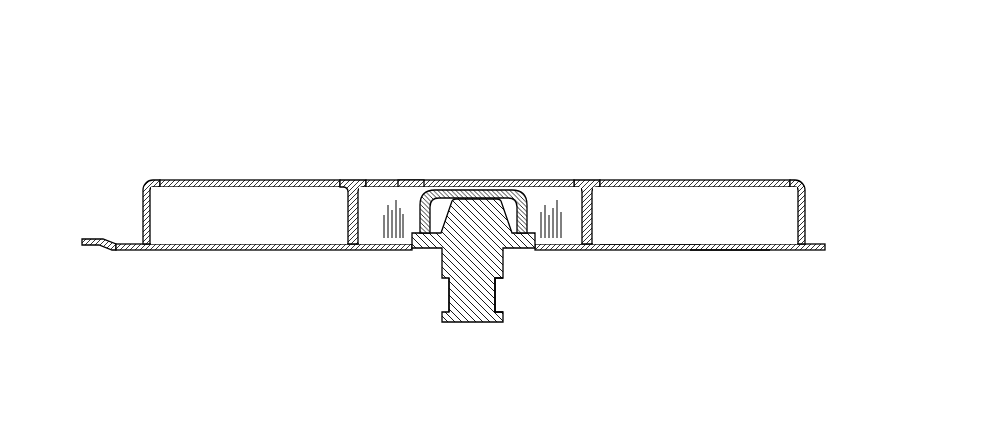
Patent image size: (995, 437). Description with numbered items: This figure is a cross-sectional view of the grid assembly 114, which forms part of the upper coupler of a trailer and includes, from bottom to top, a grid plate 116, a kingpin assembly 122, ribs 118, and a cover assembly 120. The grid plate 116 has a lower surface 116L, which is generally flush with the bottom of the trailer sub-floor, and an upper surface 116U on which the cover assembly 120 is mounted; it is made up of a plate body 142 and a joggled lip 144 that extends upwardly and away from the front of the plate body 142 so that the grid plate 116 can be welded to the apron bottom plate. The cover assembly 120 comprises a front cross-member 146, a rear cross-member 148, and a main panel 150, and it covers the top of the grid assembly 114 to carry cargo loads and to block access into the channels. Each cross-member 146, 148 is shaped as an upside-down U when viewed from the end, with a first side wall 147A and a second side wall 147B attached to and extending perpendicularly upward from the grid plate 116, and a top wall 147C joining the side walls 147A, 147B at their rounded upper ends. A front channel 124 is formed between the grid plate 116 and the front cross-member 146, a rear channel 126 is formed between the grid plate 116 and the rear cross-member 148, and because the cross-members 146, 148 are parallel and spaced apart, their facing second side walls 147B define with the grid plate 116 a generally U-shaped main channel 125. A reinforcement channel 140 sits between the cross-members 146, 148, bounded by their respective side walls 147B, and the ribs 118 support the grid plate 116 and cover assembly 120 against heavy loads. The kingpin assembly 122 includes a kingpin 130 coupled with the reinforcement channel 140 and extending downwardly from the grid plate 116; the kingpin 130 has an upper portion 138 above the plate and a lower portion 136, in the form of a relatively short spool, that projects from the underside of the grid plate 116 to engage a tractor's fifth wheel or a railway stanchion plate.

The grid assembly 114 is at (538, 97).
The grid plate 116 is at (302, 252).
The upper surface 116U is at (630, 247).
The lower surface 116L is at (735, 252).
The ribs 118 is at (542, 198).
The cover assembly 120 is at (300, 160).
The kingpin assembly 122 is at (513, 263).
The front channel 124 is at (167, 208).
The main channel 125 is at (410, 227).
The rear channel 126 is at (753, 210).
The kingpin 130 is at (448, 291).
The lower portion (spool) 136 is at (497, 293).
The upper portion 138 is at (504, 203).
The reinforcement channel 140 is at (411, 178).
The plate body 142 is at (223, 251).
The joggled lip 144 is at (102, 251).
The front cross-member 146 is at (183, 177).
The first side wall 147A is at (146, 212).
The second side wall 147B is at (347, 178).
The top wall 147C is at (707, 178).
The rear cross-member 148 is at (760, 178).
The main panel 150 is at (466, 180).